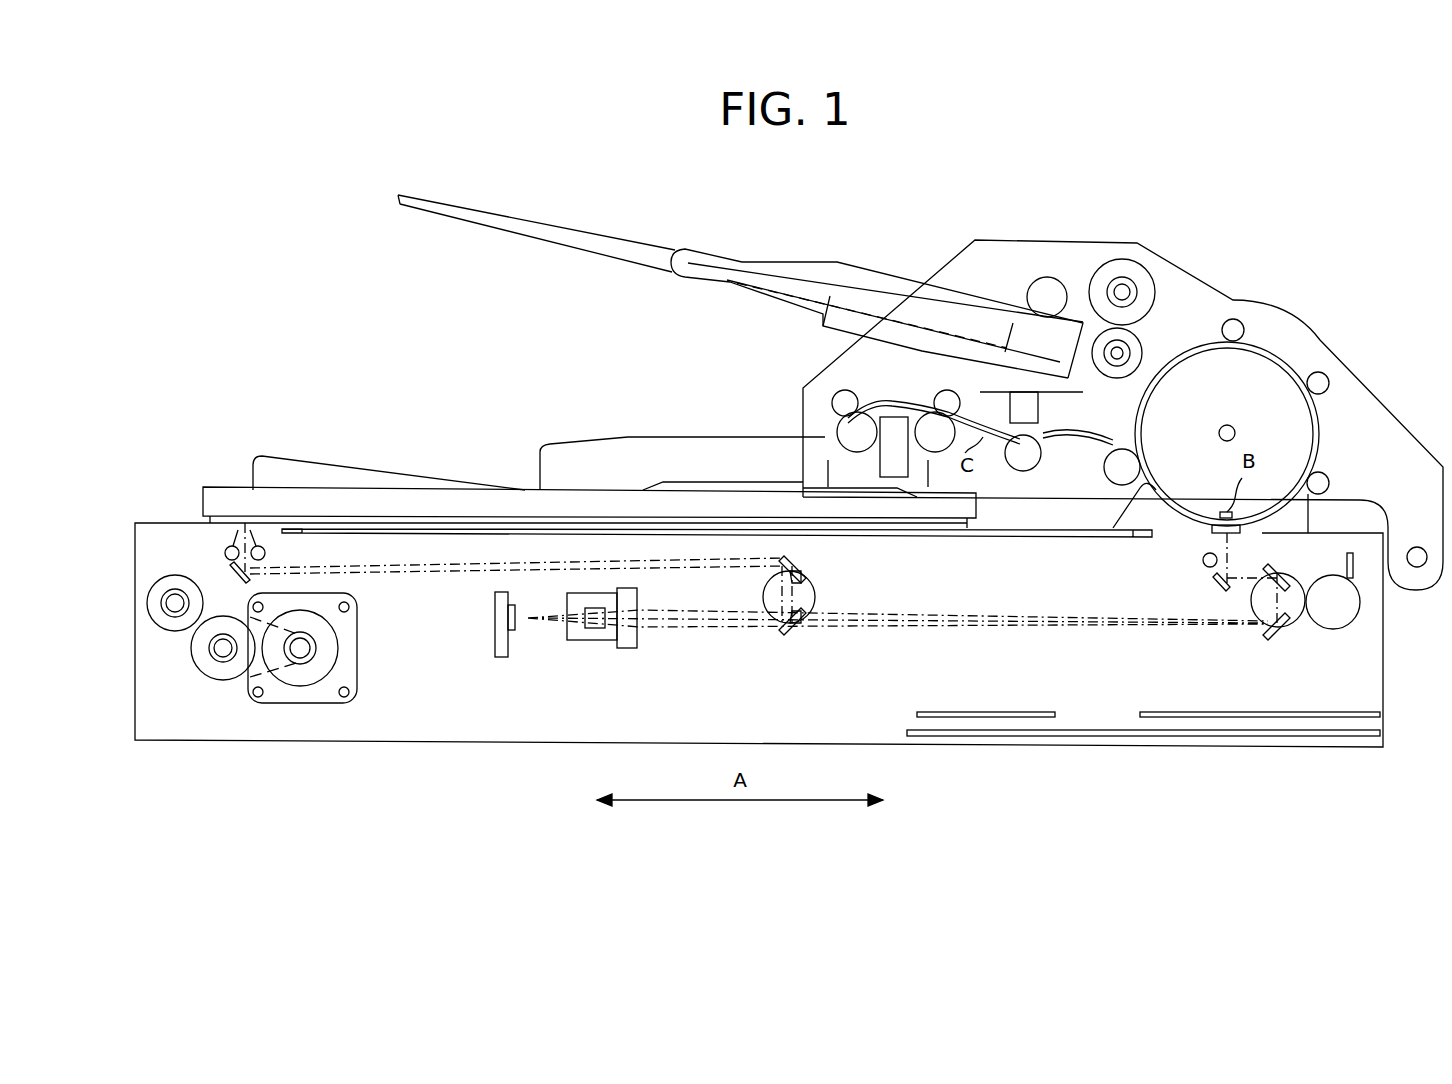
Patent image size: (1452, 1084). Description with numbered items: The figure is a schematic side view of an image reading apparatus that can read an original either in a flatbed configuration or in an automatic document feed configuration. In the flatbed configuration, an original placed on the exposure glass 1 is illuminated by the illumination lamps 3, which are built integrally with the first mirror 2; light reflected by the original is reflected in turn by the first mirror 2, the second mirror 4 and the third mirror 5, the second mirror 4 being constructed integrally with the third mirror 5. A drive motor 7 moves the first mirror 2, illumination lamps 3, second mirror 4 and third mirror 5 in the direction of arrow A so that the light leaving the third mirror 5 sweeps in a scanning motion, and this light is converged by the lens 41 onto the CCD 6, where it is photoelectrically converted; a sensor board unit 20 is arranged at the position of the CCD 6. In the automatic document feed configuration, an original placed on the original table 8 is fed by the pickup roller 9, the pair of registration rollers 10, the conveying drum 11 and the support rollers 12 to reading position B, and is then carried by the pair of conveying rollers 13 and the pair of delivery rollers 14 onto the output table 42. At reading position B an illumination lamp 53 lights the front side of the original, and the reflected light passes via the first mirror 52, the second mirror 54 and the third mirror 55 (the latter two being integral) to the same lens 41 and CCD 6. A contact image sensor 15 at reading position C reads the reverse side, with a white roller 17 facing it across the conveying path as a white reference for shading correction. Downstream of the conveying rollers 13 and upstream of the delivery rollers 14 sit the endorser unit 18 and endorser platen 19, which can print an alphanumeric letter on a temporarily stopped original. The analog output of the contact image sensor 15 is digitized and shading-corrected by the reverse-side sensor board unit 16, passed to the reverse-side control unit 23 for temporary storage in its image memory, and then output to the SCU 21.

The exposure glass 1 is at (1058, 537).
The first mirror 2 is at (236, 583).
The illumination lamps 3 is at (225, 553).
The second mirror 4 is at (806, 568).
The third mirror 5 is at (795, 630).
The charged couple device (CCD) 6 is at (513, 637).
The drive motor 7 is at (358, 650).
The original table 8 is at (705, 248).
The pickup roller 9 is at (1040, 283).
The pair of registration rollers 10 is at (1118, 258).
The conveying drum 11 is at (1282, 353).
The support rollers 12 is at (1222, 330).
The pair of conveying rollers 13 is at (940, 387).
The pair of delivery rollers 14 is at (850, 392).
The contact image sensor (CIS) 15 is at (1040, 410).
The reverse-side sensor board unit (RSBU) 16 is at (987, 392).
The white roller 17 is at (1042, 453).
The endorser unit 18 is at (880, 467).
The endorser platen 19 is at (895, 402).
The sensor board unit (SBU) 20 is at (492, 643).
The SCU 21 is at (907, 733).
The reverse-side control unit (RCU) 23 is at (1175, 712).
The lens 41 is at (593, 630).
The output table 42 is at (653, 481).
The first mirror 52 is at (1214, 588).
The illumination lamp 53 is at (1203, 560).
The second mirror 54 is at (1277, 570).
The third mirror 55 is at (1280, 637).